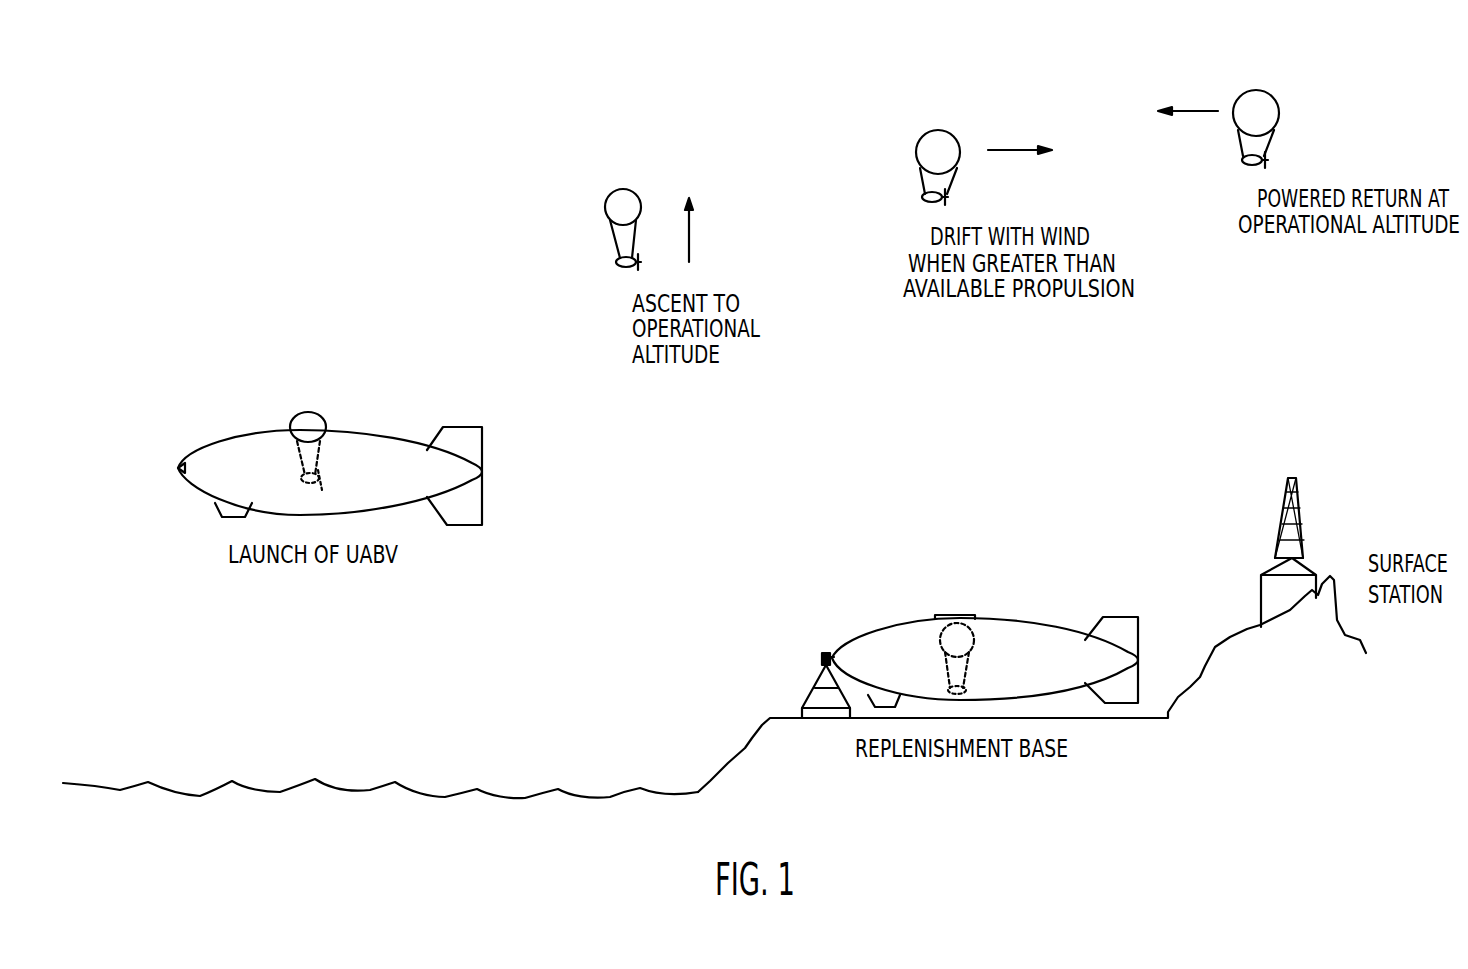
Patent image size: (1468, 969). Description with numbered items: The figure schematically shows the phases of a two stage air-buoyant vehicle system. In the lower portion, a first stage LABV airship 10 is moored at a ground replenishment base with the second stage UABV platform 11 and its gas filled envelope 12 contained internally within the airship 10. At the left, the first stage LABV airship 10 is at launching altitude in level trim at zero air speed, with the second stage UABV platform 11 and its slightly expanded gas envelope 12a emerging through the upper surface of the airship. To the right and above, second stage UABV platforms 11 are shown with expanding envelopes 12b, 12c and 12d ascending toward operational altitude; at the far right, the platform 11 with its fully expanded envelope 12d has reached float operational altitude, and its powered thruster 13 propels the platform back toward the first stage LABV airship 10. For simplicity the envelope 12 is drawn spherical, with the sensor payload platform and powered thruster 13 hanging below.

The first stage LABV airship 10 is at (397, 417).
The second stage UABV platform 11 is at (776, 370).
The gas filled envelope 12 is at (975, 630).
The slightly expanded gas envelope 12a is at (318, 418).
The expanding envelope 12b is at (627, 197).
The expanding envelope 12c is at (944, 134).
The fully expanded envelope 12d is at (1265, 100).
The powered thruster 13 is at (618, 268).